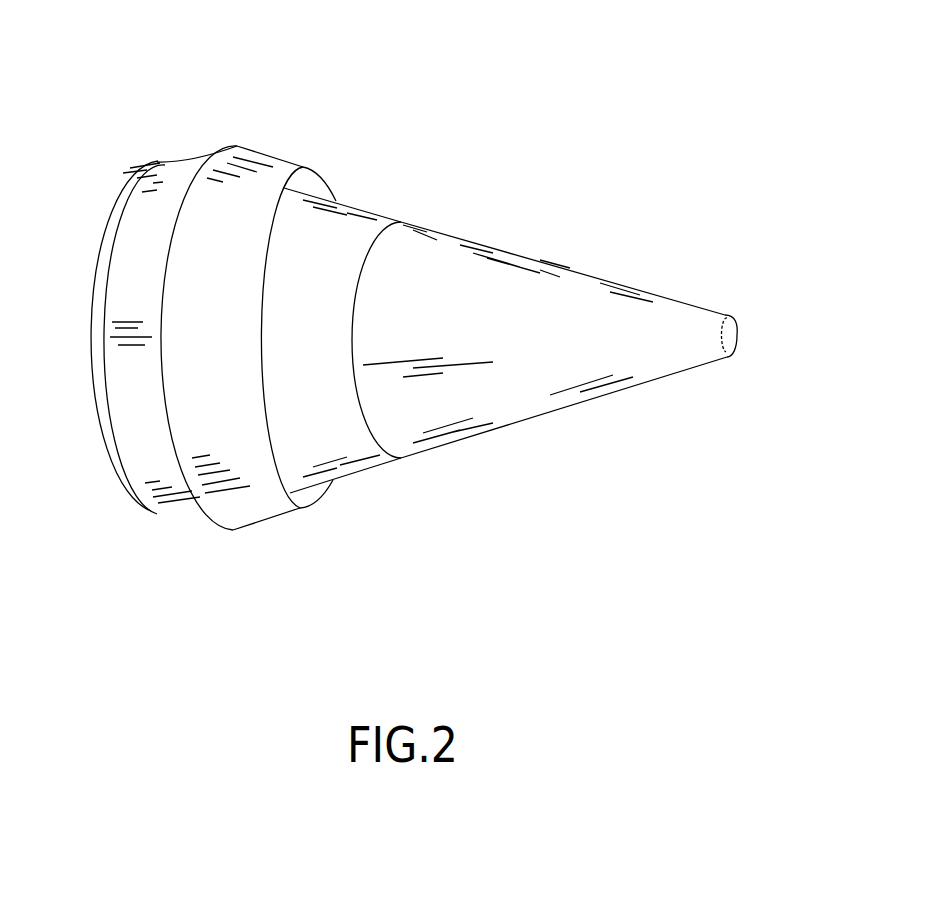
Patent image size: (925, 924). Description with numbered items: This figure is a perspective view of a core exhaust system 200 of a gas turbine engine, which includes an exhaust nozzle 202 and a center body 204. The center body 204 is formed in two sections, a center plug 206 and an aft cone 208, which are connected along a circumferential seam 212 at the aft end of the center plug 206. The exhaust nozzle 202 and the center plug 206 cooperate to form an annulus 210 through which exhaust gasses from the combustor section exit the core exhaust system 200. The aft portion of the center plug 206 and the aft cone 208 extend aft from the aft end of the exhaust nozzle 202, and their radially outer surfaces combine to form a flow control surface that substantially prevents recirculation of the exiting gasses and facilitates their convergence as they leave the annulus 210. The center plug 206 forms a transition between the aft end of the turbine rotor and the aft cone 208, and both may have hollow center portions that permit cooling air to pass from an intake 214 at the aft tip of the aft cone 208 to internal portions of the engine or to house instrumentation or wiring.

The core exhaust system 200 is at (430, 302).
The exhaust nozzle 202 is at (242, 502).
The center body 204 is at (546, 321).
The center plug 206 is at (350, 433).
The aft cone 208 is at (517, 383).
The annulus 210 is at (330, 170).
The circumferential seam 212 is at (413, 220).
The intake 214 is at (738, 332).